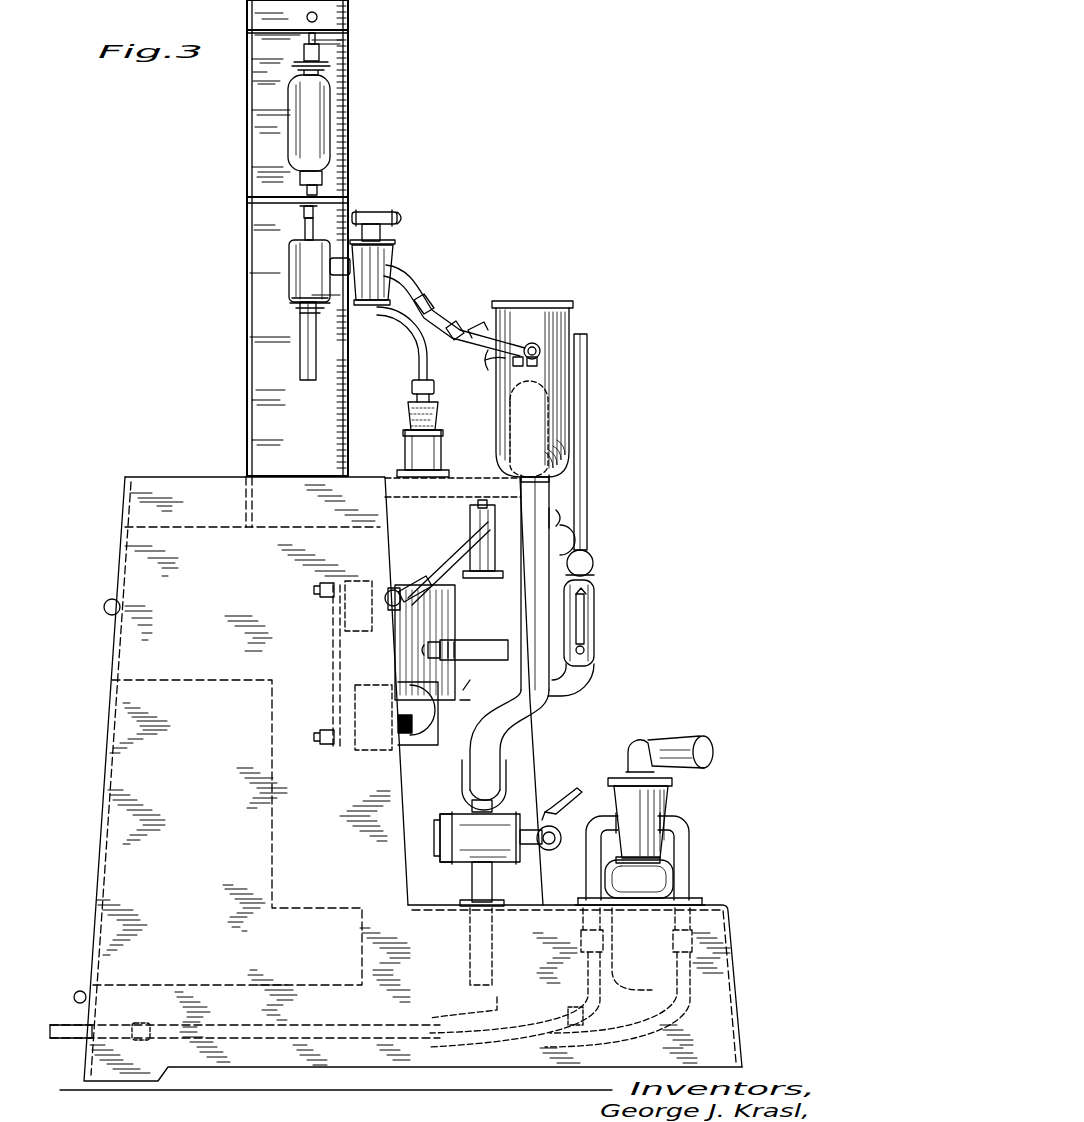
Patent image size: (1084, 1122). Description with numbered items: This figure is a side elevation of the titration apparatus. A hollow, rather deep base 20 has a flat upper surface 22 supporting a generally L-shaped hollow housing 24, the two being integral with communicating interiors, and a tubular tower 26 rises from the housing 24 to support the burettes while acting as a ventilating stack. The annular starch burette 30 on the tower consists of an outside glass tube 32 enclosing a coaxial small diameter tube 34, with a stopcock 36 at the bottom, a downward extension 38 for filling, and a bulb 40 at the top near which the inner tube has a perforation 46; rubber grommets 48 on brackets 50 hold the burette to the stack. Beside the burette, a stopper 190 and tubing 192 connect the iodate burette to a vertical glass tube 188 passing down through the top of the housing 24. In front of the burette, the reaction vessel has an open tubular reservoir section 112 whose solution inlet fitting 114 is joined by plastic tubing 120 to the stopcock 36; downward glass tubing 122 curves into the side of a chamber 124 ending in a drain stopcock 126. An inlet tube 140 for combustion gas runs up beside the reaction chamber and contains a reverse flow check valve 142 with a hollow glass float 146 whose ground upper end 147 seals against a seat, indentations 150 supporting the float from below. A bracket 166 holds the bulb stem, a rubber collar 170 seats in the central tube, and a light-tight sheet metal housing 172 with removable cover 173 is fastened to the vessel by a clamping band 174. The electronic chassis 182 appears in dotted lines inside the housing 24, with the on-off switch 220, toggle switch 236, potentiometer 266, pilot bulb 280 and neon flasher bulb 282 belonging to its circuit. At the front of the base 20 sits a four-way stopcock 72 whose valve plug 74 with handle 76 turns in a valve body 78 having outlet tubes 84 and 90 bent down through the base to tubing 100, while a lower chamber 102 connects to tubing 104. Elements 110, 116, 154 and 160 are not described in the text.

The base 20 is at (730, 955).
The upper surface 22 is at (715, 908).
The housing 24 is at (135, 552).
The tower 26 is at (245, 222).
The burette 30 is at (300, 226).
The outside glass tube 32 is at (295, 252).
The small diameter tube 34 is at (302, 210).
The stopcock 36 is at (392, 258).
The downward extension 38 is at (305, 346).
The bulb 40 is at (330, 112).
The perforation 46 is at (292, 300).
The rubber grommets 48 is at (319, 57).
The brackets 50 is at (332, 66).
The four-way stopcock 72 is at (679, 803).
The valve plug 74 is at (644, 745).
The handle 76 is at (712, 748).
The valve body 78 is at (666, 810).
The outlet tube 84 is at (586, 870).
The outlet tube 90 is at (692, 845).
The fitting and tubing piece 100 is at (70, 1025).
The chamber 102 is at (650, 975).
The tubing 104 is at (494, 1012).
The pipe housing 110 is at (506, 500).
The reservoir section 112 is at (560, 312).
The solution inlet fitting 114 is at (500, 372).
The inlet 116 is at (520, 383).
The plastic tubing 120 is at (432, 318).
The glass tubing 122 is at (525, 487).
The chamber 124 is at (465, 790).
The stopcock 126 is at (462, 860).
The inlet tube 140 is at (590, 360).
The reverse flow check valve 142 is at (606, 621).
The glass float 146 is at (582, 630).
The upper end of float 147 is at (580, 600).
The indentations 150 is at (584, 650).
The bracket 154 is at (555, 512).
The side wall 160 is at (100, 720).
The bracket 166 is at (467, 570).
The rubber collar 170 is at (452, 600).
The sheet metal housing 172 is at (415, 606).
The removable cover 173 is at (333, 660).
The clamping band 174 is at (505, 665).
The electronic chassis 182 is at (160, 680).
The glass tube 188 is at (406, 460).
The stopper 190 is at (410, 418).
The tubing 192 is at (417, 348).
The on-off switch 220 is at (400, 588).
The toggle switch 236 is at (565, 790).
The potentiometer 266 is at (432, 738).
The pilot bulb 280 is at (562, 542).
The neon flasher bulb 282 is at (566, 688).